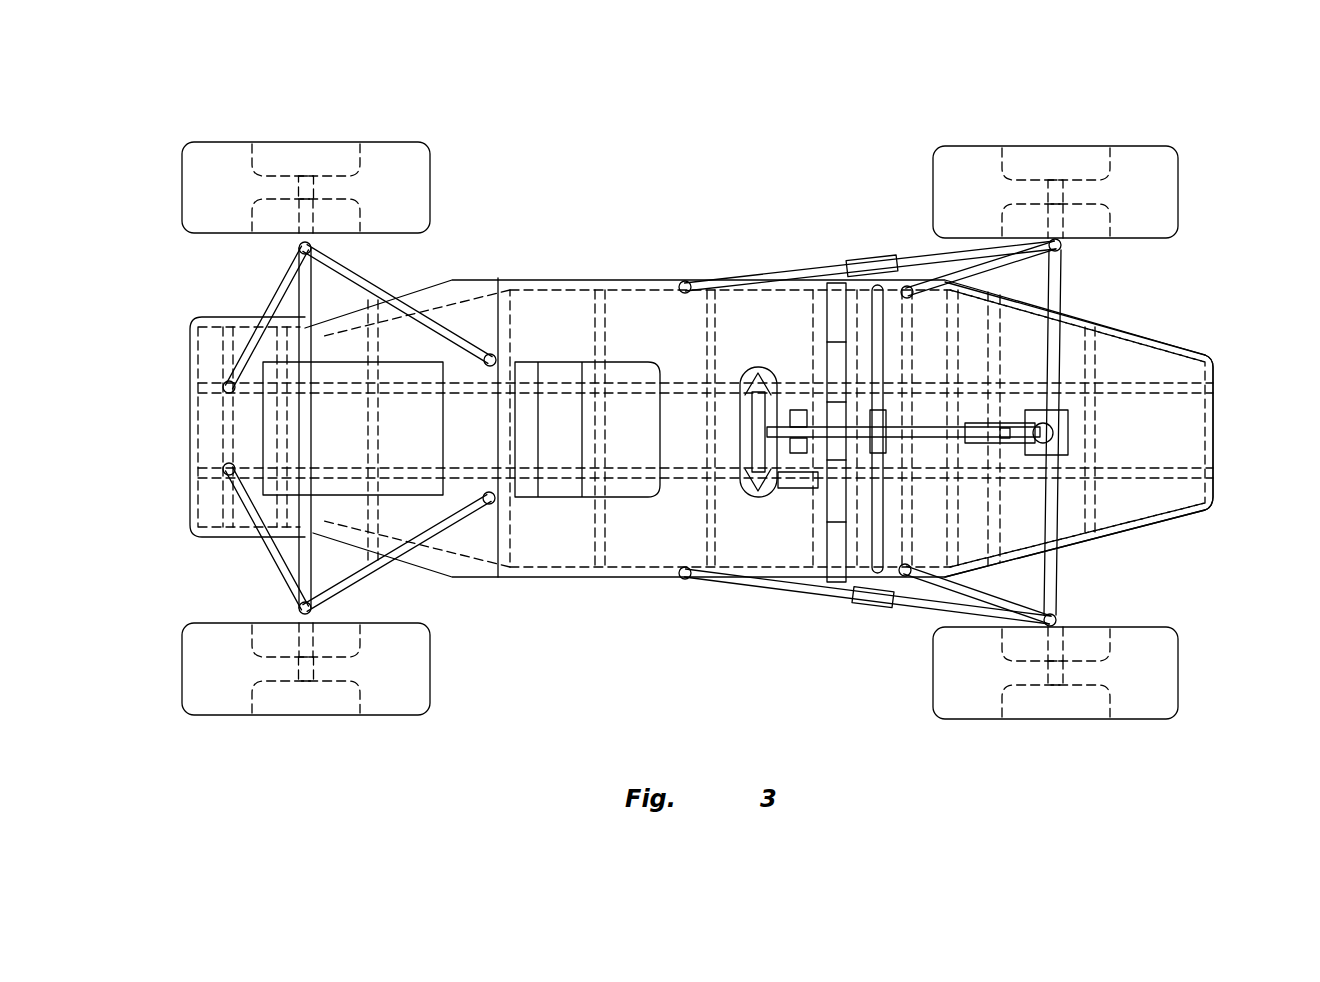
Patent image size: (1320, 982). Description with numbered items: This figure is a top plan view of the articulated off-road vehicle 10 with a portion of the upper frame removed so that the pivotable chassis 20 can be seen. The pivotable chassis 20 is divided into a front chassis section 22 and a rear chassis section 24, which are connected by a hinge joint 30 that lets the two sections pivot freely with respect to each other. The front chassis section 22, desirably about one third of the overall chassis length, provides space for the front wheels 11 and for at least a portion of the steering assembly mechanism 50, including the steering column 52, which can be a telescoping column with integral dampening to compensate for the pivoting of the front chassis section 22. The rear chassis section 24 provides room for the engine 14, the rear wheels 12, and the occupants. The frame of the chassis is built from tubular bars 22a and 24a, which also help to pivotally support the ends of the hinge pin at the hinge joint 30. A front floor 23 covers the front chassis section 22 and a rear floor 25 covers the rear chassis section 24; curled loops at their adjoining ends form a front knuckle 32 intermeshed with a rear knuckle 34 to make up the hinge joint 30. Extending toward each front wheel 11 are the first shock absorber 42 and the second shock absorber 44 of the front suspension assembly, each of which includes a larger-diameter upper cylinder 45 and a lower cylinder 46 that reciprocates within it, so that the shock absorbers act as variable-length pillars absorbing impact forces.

The articulated off-road vehicle 10 is at (806, 119).
The front wheel 11 is at (1170, 148).
The rear wheel 12 is at (403, 142).
The engine 14 is at (247, 428).
The pivotable chassis 20 is at (613, 605).
The front chassis section 22 is at (1122, 567).
The tubular bars 22a is at (1125, 385).
The front floor 23 is at (1182, 430).
The rear chassis section 24 is at (340, 381).
The tubular bars 24a is at (228, 336).
The rear floor 25 is at (560, 303).
The hinge joint 30 is at (854, 410).
The front knuckle 32 is at (845, 283).
The rear knuckle 34 is at (835, 350).
The first shock absorber 42 is at (900, 423).
The second shock absorber 44 is at (890, 236).
The upper cylinder 45 is at (867, 410).
The lower cylinder 46 is at (927, 253).
The steering assembly mechanism 50 is at (1009, 375).
The steering column 52 is at (928, 450).